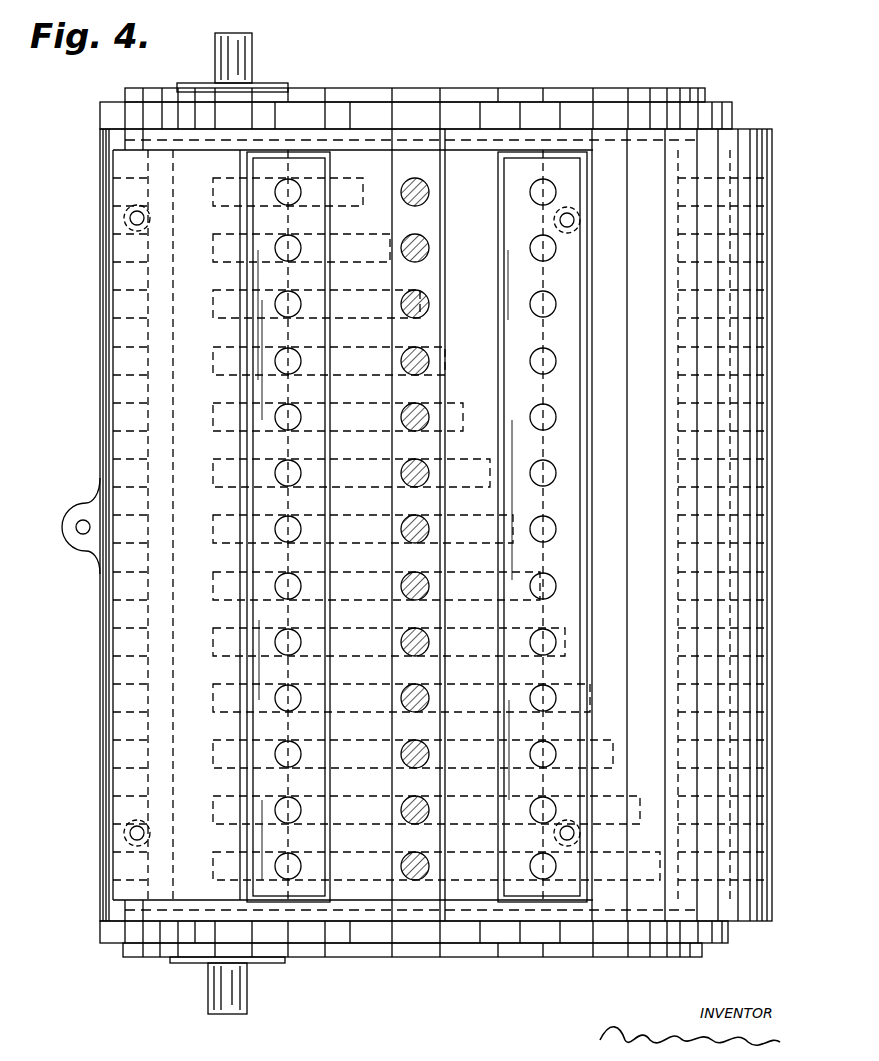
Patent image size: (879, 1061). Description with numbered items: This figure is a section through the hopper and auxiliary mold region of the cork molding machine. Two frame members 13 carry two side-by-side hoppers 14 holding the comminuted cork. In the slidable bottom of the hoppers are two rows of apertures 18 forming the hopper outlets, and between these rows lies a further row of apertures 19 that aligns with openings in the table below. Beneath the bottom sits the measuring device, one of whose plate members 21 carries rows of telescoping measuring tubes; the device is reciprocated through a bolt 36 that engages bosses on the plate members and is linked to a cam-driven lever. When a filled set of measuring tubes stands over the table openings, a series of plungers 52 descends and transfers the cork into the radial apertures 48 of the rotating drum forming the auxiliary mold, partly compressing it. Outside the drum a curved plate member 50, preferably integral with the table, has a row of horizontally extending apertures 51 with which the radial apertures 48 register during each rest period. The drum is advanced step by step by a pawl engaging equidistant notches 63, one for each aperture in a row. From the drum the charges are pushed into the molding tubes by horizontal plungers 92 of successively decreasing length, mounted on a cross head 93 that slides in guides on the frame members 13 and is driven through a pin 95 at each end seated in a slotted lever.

The frame members 13 is at (528, 946).
The hoppers 14 is at (250, 492).
The apertures 18 is at (290, 758).
The apertures 19 is at (402, 760).
The plate member 21 is at (118, 862).
The bolt 36 is at (80, 530).
The radial apertures 48 is at (690, 487).
The curved plate member 50 is at (646, 525).
The horizontally extending apertures 51 is at (770, 460).
The plungers 52 is at (430, 258).
The notches 63 is at (463, 935).
The plungers 92 is at (472, 460).
The cross head 93 is at (172, 960).
The pin 95 is at (242, 993).